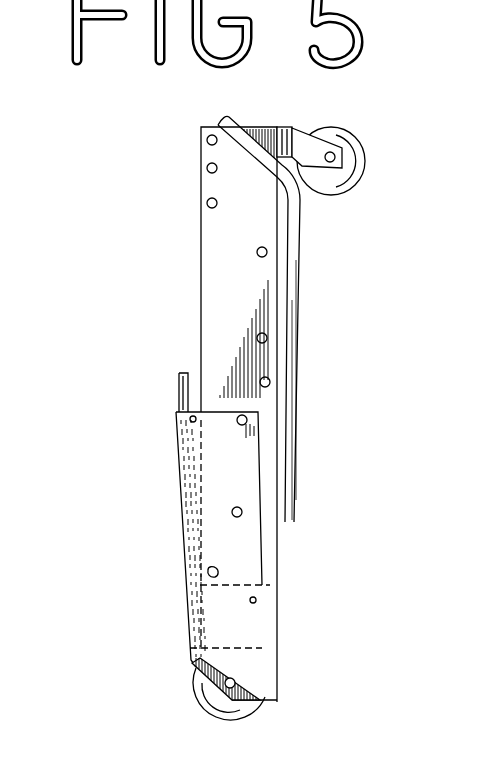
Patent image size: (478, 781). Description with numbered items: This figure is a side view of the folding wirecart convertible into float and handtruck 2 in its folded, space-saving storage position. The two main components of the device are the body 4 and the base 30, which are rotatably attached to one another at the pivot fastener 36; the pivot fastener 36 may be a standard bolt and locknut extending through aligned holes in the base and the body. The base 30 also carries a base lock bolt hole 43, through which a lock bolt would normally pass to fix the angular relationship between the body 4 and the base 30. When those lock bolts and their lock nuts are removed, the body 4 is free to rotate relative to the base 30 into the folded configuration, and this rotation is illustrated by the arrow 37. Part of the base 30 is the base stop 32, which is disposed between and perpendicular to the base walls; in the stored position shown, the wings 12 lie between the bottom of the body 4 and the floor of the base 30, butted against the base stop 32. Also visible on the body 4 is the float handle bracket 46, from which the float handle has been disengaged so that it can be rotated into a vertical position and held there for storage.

The folding wirecart convertible into float and handtruck 2 is at (108, 288).
The body 4 is at (200, 222).
The wings 12 is at (186, 375).
The base 30 is at (190, 660).
The base stop 32 is at (237, 645).
The pivot fastener 36 is at (210, 572).
The arrow 37 is at (157, 463).
The base lock bolt hole 43 is at (244, 505).
The float handle bracket 46 is at (291, 520).